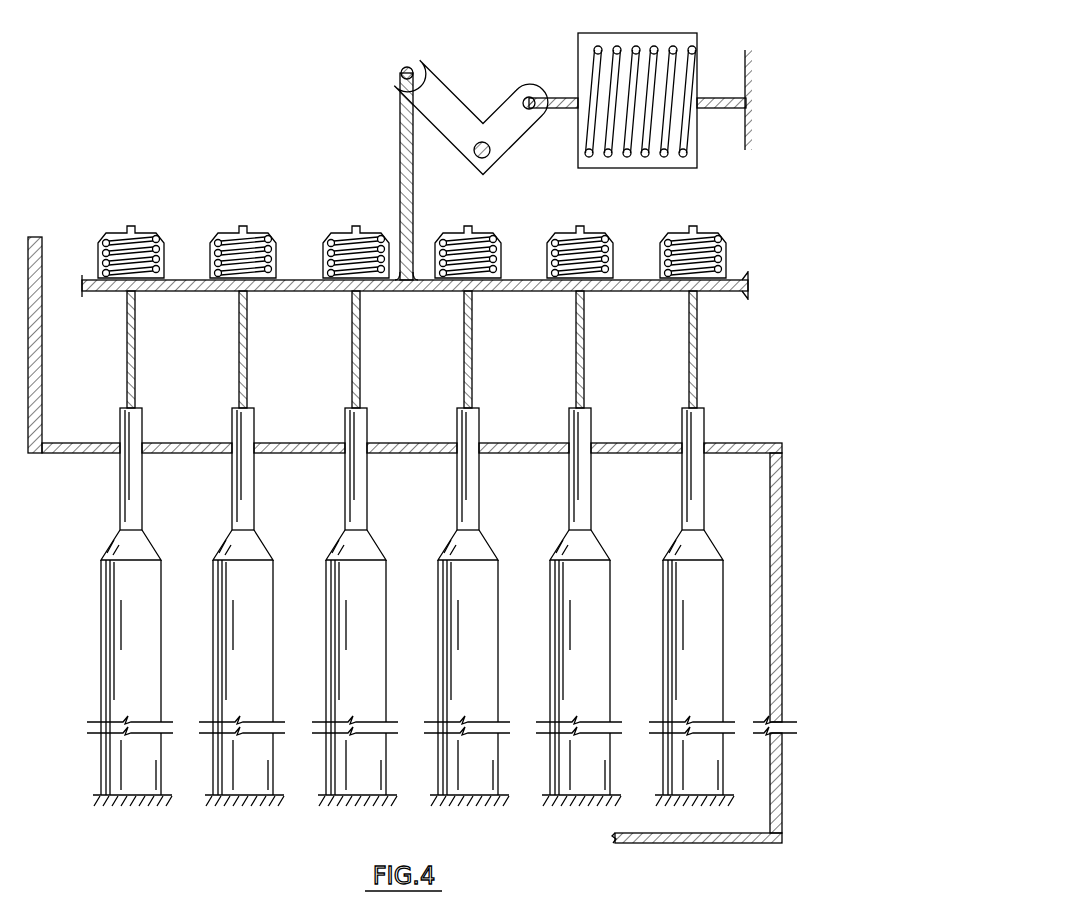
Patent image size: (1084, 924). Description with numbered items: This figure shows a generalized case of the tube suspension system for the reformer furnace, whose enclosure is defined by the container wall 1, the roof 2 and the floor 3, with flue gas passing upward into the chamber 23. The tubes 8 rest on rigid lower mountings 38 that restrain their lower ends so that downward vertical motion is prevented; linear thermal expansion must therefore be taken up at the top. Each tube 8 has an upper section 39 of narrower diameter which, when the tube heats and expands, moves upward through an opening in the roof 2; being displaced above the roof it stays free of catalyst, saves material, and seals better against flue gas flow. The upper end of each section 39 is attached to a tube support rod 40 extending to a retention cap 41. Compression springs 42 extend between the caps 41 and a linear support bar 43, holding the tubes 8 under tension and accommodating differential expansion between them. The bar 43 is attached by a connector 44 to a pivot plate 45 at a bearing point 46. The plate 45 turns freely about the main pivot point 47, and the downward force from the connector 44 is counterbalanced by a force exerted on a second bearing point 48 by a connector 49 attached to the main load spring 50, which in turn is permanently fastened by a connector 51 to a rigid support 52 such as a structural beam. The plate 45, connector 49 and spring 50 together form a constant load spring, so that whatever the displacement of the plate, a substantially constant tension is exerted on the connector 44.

The container wall 1 is at (770, 490).
The roof 2 is at (735, 443).
The floor 3 is at (722, 833).
The tubes 8 is at (213, 630).
The chamber 23 is at (42, 247).
The rigid lower mountings 38 is at (205, 800).
The upper sections 39 is at (232, 500).
The tube support rod 40 is at (239, 330).
The retention cap 41 is at (165, 238).
The springs 42 is at (213, 253).
The linear support bar 43 is at (706, 291).
The connector 44 is at (400, 140).
The pivot plate 45 is at (456, 97).
The bearing point 46 is at (401, 73).
The main pivot point 47 is at (489, 158).
The bearing point 48 is at (535, 97).
The connector 49 is at (565, 108).
The main load spring 50 is at (620, 48).
The connector 51 is at (730, 98).
The rigid support 52 is at (745, 138).